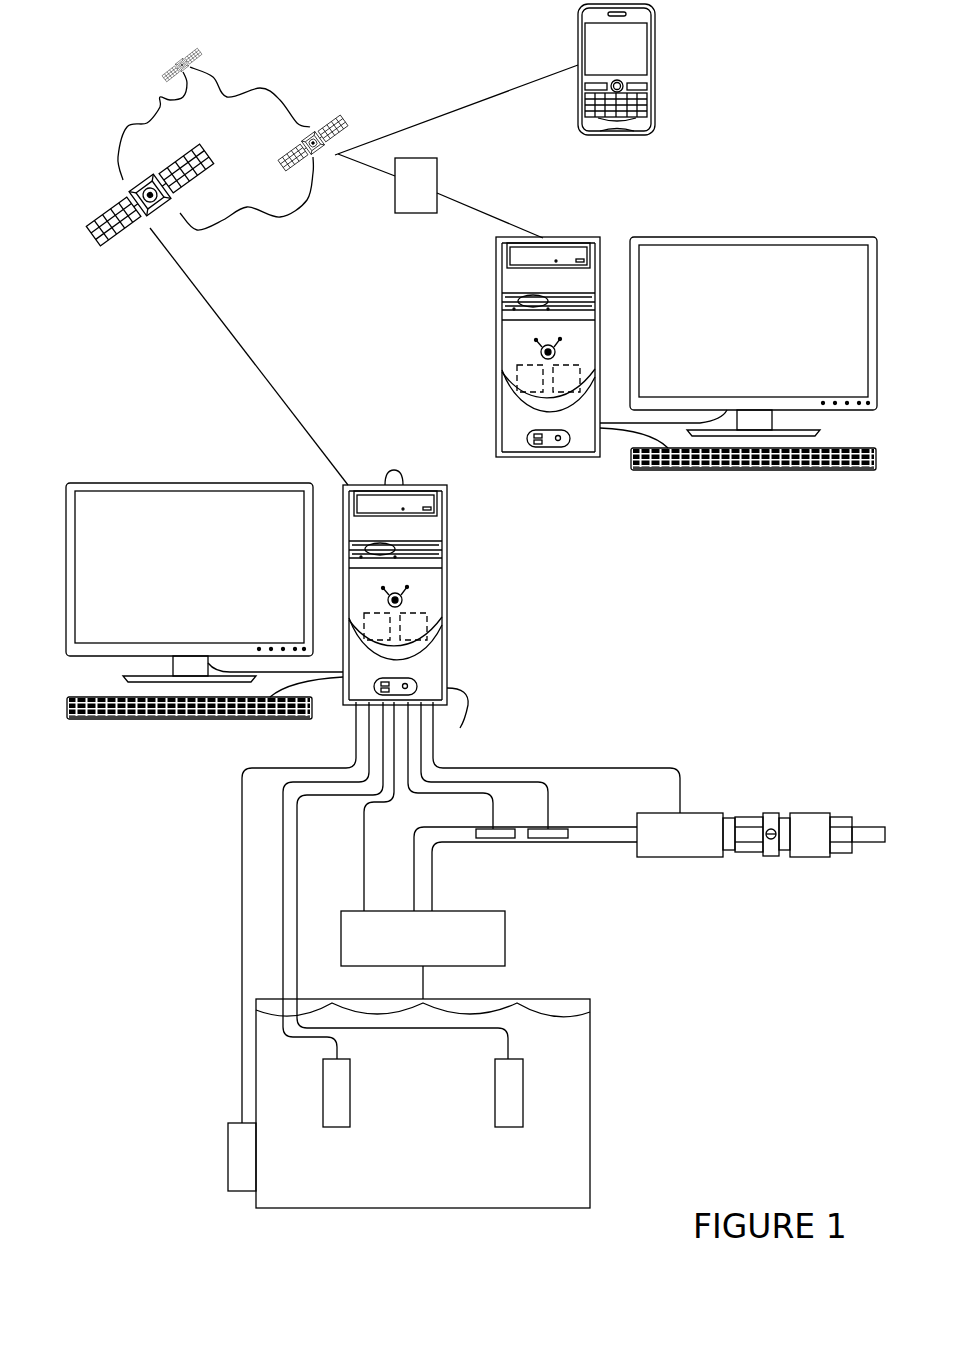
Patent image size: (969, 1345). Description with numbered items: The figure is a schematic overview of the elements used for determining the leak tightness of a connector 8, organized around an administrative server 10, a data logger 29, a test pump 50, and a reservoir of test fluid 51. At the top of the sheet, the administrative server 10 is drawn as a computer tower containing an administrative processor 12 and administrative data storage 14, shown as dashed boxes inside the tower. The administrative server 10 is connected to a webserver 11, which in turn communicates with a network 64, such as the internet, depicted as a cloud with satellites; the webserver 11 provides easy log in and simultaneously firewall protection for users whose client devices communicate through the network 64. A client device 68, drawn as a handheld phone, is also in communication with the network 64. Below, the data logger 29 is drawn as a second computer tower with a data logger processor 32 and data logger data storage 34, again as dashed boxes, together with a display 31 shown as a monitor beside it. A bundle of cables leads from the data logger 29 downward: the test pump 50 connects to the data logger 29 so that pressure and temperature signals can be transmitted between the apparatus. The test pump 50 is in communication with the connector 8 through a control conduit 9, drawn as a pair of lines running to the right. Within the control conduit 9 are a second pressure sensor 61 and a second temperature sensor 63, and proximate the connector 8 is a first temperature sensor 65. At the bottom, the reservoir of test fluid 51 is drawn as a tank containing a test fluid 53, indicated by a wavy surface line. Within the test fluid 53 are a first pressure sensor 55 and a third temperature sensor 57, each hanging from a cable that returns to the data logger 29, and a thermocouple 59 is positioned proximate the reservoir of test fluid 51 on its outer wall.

The connector 8 is at (808, 857).
The control conduit 9 is at (587, 823).
The administrative server 10 is at (665, 339).
The webserver 11 is at (437, 160).
The administrative processor 12 is at (527, 385).
The administrative data storage 14 is at (565, 385).
The data logger 29 is at (418, 591).
The display 31 is at (110, 503).
The data logger processor 32 is at (417, 632).
The data logger data storage 34 is at (407, 653).
The test pump 50 is at (505, 940).
The reservoir of test fluid 51 is at (590, 1103).
The test fluid 53 is at (563, 1000).
The first pressure sensor 55 is at (507, 1085).
The third temperature sensor 57 is at (337, 1083).
The thermocouple 59 is at (232, 1155).
The second pressure sensor 61 is at (496, 838).
The second temperature sensor 63 is at (548, 838).
The network 64 is at (270, 83).
The first temperature sensor 65 is at (680, 857).
The client device 68 is at (655, 65).